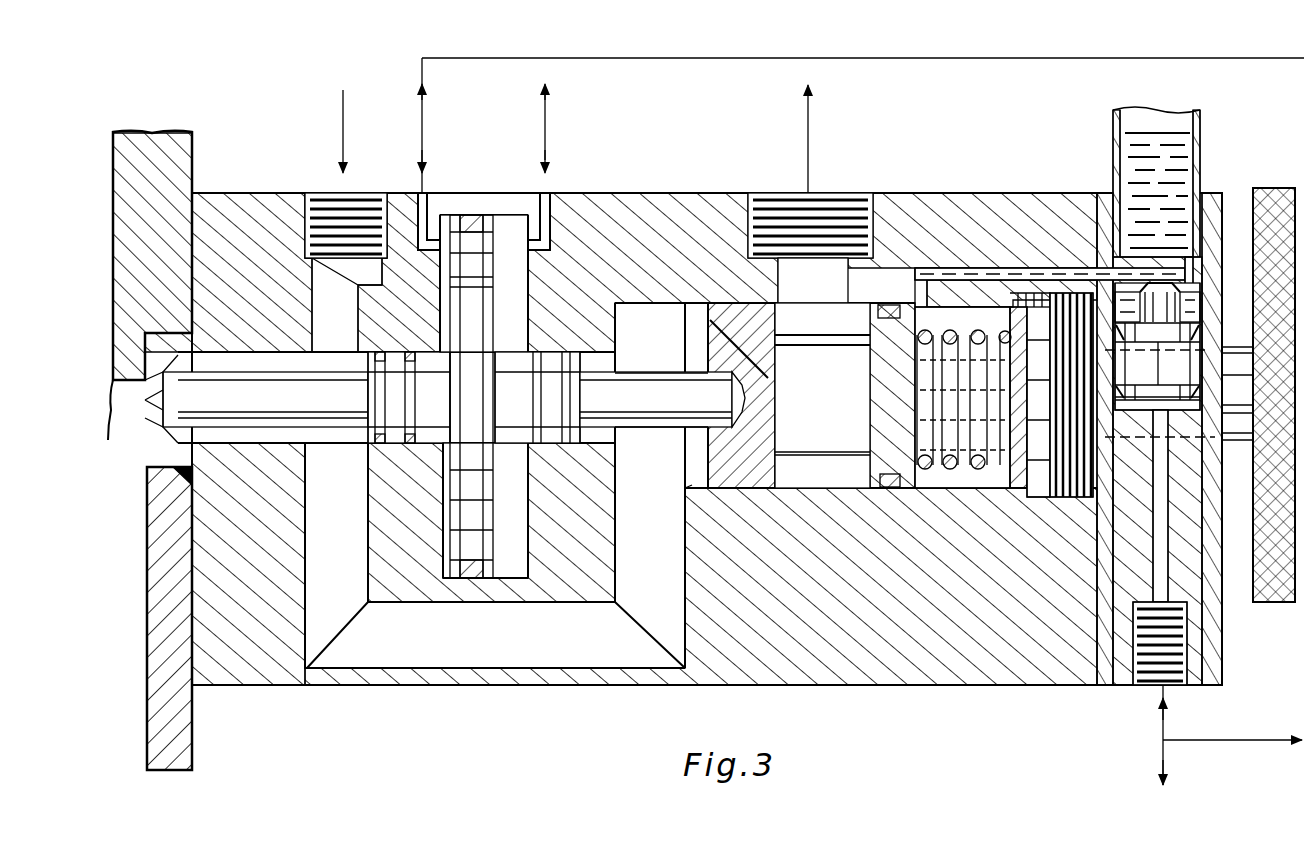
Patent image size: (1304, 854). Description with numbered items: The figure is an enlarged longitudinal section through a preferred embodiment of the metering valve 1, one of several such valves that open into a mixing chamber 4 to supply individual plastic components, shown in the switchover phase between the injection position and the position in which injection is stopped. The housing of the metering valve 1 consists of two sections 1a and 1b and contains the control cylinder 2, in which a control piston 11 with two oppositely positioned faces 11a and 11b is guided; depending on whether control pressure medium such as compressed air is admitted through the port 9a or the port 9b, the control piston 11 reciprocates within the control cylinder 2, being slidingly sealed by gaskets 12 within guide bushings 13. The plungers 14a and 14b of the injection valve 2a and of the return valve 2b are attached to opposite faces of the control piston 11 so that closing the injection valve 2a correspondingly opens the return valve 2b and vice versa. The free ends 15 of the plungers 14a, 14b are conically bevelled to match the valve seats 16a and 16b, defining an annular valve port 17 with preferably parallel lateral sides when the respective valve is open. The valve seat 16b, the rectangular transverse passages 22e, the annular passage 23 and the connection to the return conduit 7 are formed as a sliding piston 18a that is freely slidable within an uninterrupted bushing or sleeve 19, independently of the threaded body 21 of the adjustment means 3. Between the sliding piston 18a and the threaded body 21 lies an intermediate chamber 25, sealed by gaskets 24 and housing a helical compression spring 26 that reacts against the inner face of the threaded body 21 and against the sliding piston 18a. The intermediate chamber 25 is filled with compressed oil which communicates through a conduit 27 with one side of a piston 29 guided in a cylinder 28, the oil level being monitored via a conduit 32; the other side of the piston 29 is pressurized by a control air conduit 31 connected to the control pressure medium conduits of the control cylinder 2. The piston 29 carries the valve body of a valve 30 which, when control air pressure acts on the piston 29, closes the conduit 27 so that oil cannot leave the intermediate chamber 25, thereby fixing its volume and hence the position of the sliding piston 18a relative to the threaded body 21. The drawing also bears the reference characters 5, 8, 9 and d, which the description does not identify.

The metering valve 1 is at (626, 190).
The housing section 1a is at (412, 672).
The housing section 1b is at (856, 670).
The control cylinder 2 is at (517, 526).
The injection valve 2a is at (166, 398).
The return valve 2b is at (730, 402).
The adjustment means 3 is at (992, 330).
The mixing chamber 4 is at (133, 492).
The direction of force 5 is at (341, 118).
The return conduit 7 is at (817, 294).
The cavity 8 is at (473, 650).
The slot 9 is at (550, 193).
The port 9a is at (422, 130).
The port 9b is at (545, 130).
The control piston 11 is at (468, 487).
The face of control piston 11a is at (450, 300).
The face of control piston 11b is at (497, 316).
The gaskets 12 is at (410, 446).
The guide bushings 13 is at (620, 462).
The plunger 14a is at (330, 430).
The plunger 14b is at (622, 418).
The free end 15 is at (152, 410).
The valve seat 16a is at (150, 400).
The valve seat 16b is at (770, 400).
The annular valve port 17 is at (740, 365).
The sliding piston 18a is at (912, 472).
The bushing 19 is at (688, 492).
The threaded body 21 is at (1020, 462).
The transverse passages 22e is at (846, 420).
The annular passage 23 is at (834, 487).
The gaskets 24 is at (878, 310).
The intermediate chamber 25 is at (936, 490).
The helical compression spring 26 is at (985, 402).
The conduit 27 is at (1049, 268).
The cylinder 28 is at (1226, 432).
The piston 29 is at (1192, 350).
The valve 30 is at (1180, 300).
The control air conduit 31 is at (1142, 688).
The conduit 32 is at (1192, 274).
The disc thickness d is at (1068, 360).